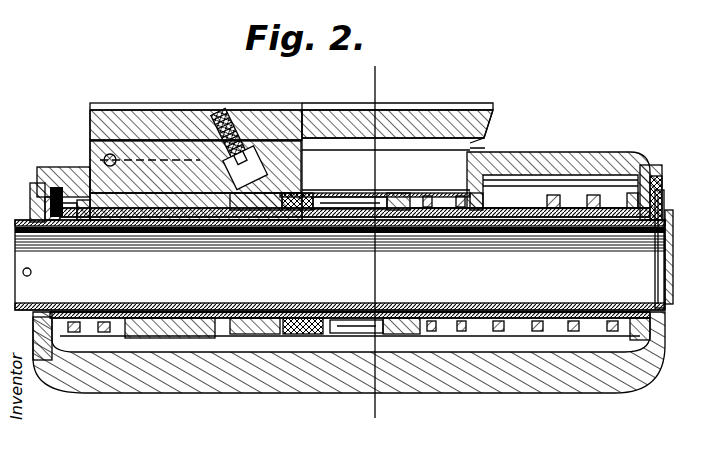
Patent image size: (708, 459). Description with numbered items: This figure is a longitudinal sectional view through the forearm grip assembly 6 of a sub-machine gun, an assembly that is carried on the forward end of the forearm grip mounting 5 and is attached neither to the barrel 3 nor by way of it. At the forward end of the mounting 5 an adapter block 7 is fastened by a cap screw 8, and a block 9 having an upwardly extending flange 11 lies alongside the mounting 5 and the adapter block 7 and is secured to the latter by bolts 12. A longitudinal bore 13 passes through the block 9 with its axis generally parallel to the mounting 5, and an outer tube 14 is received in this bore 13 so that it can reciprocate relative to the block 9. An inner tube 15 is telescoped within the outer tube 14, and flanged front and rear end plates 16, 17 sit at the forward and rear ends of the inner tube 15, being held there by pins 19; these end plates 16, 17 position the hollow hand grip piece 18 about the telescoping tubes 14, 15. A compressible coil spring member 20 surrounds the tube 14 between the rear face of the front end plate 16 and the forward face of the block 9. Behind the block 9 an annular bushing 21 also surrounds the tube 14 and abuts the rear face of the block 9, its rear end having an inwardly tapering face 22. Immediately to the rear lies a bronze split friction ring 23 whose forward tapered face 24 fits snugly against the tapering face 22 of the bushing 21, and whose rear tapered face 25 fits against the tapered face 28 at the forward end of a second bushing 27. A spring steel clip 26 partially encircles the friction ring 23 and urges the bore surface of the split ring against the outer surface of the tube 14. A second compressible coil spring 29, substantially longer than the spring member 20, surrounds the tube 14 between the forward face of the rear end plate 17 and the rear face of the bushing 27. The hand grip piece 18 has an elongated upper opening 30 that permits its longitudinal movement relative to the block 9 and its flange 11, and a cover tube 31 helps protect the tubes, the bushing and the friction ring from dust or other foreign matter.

The barrel 3 is at (396, 75).
The forearm grip mounting 5 is at (466, 108).
The forearm grip assembly 6 is at (630, 374).
The adapter block 7 is at (152, 145).
The cap screw 8 is at (238, 118).
The block 9 is at (23, 273).
The flange 11 is at (188, 104).
The bolts 12 is at (95, 158).
The longitudinal bore 13 is at (210, 340).
The outer tube 14 is at (140, 228).
The inner tube 15 is at (176, 228).
The front end plate 16 is at (30, 214).
The rear end plate 17 is at (660, 186).
The hand grip piece 18 is at (568, 154).
The pins 19 is at (669, 265).
The coil spring member 20 is at (62, 172).
The bushing 21 is at (290, 228).
The tapering face 22 is at (298, 310).
The split friction ring 23 is at (372, 310).
The tapered face 24 is at (330, 310).
The tapered face 25 is at (392, 312).
The spring steel clip 26 is at (352, 196).
The second bushing 27 is at (452, 182).
The tapered face 28 is at (390, 196).
The coil spring 29 is at (596, 196).
The upper opening 30 is at (490, 137).
The cover tube 31 is at (510, 178).